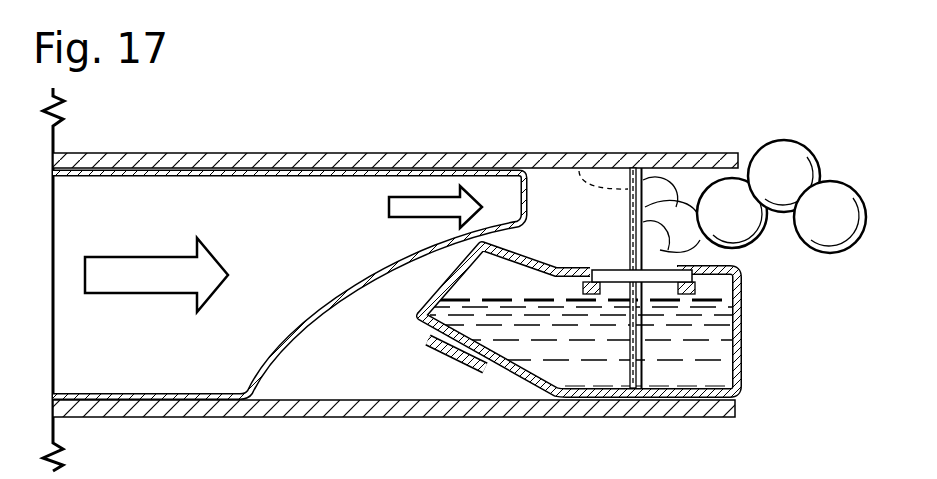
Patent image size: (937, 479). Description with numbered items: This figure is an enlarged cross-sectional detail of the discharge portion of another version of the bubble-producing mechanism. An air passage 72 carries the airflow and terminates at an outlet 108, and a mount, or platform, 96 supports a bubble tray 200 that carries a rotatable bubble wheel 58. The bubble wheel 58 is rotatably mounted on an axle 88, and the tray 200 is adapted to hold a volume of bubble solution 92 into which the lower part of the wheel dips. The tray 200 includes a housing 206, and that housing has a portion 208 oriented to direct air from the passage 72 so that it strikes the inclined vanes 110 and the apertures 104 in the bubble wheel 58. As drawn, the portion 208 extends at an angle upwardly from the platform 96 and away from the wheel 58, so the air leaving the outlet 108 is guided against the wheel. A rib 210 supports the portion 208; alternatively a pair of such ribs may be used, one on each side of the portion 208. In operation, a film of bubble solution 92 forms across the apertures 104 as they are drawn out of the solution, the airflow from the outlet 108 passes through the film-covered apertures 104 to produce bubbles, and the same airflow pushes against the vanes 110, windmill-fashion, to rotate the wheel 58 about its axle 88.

The air passage 72 is at (233, 193).
The outlet 108 is at (528, 192).
The apertures 104 is at (577, 168).
The inclined vanes 110 is at (633, 168).
The bubble wheel 58 is at (651, 165).
The axle 88 is at (618, 267).
The bubble tray 200 is at (629, 352).
The housing 206 is at (740, 338).
The bubble solution 92 is at (717, 378).
The rib 210 is at (445, 358).
The portion 208 is at (518, 378).
The mount, or platform 96 is at (676, 418).